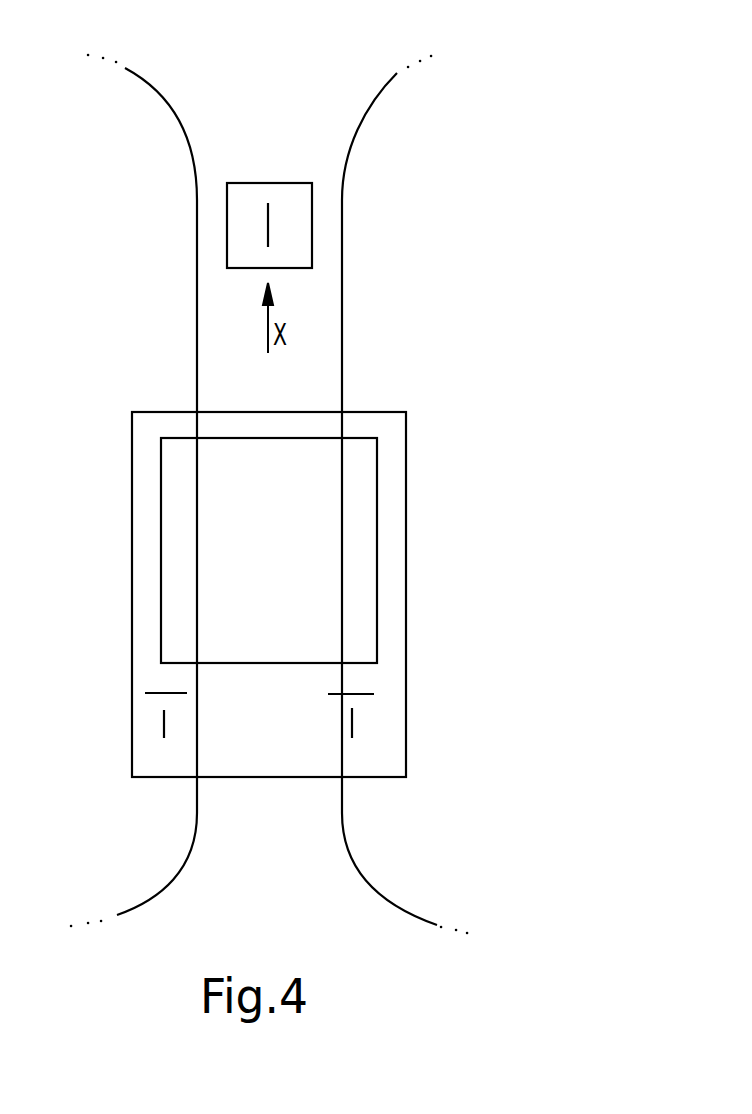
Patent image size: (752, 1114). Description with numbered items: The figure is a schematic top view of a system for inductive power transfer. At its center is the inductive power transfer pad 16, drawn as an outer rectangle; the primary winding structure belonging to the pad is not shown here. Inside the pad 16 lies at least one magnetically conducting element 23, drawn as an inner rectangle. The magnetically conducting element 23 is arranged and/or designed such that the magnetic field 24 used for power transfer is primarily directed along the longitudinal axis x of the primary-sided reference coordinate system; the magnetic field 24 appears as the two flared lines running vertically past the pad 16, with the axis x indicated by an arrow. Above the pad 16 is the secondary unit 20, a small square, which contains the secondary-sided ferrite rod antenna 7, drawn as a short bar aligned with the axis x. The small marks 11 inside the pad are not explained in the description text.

The magnetic field 24 is at (187, 128).
The secondary unit 20 is at (300, 183).
The secondary-sided ferrite rod antenna 7 is at (268, 230).
The inductive power transfer pad 16 is at (406, 650).
The magnetically conducting element 23 is at (357, 543).
The marks 11 is at (155, 692).